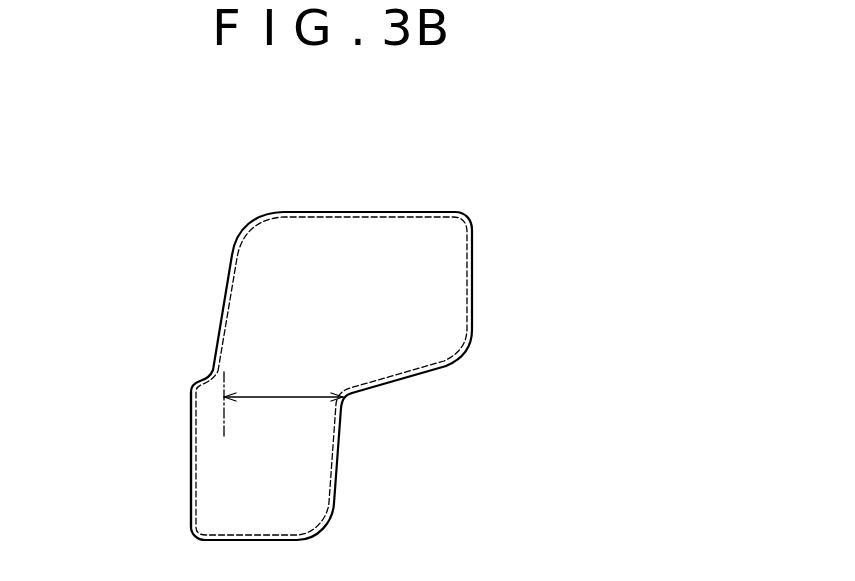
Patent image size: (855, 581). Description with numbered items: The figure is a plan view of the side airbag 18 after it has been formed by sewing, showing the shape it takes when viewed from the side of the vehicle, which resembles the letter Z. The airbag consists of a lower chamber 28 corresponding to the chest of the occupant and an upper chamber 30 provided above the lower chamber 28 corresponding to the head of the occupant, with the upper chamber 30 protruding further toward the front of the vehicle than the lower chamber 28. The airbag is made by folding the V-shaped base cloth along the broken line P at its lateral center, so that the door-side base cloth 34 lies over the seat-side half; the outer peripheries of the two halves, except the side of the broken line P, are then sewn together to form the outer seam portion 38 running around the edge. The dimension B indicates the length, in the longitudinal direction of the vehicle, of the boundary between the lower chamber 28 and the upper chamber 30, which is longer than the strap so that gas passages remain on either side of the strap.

The side airbag 18 is at (437, 186).
The upper chamber 30 is at (443, 298).
The outer seam portion 38 is at (418, 369).
The door-side base cloth 34 is at (337, 361).
The lower chamber 28 is at (303, 484).
The broken line P is at (190, 494).
The length of the boundary B is at (279, 393).